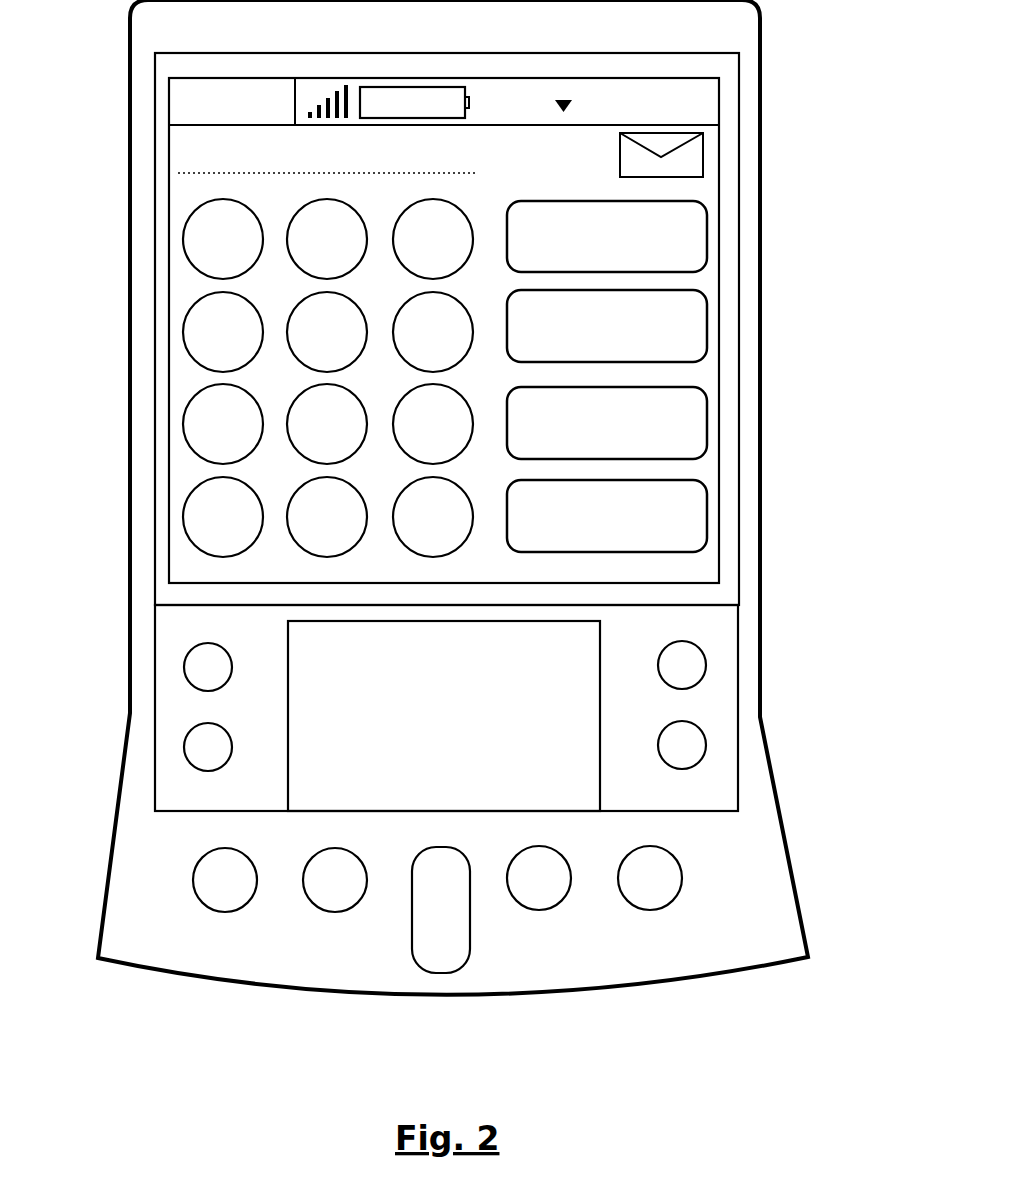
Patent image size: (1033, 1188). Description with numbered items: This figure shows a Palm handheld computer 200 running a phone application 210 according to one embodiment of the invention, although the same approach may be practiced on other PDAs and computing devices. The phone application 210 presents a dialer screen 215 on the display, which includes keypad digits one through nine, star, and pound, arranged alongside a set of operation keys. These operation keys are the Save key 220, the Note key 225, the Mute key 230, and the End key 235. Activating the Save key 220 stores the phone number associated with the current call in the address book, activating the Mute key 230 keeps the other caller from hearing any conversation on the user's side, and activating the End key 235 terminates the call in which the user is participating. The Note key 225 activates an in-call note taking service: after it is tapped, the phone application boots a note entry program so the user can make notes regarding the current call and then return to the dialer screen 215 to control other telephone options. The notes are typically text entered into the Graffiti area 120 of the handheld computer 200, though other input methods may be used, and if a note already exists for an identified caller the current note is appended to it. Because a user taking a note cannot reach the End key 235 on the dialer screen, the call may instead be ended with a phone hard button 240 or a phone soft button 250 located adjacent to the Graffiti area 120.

The handheld computer 200 is at (818, 760).
The phone application 210 is at (727, 168).
The dialer screen 215 is at (118, 188).
The Save key 220 is at (685, 226).
The Note key 225 is at (685, 318).
The Mute key 230 is at (685, 413).
The End key 235 is at (685, 506).
The phone hard button 240 is at (655, 868).
The phone soft button 250 is at (687, 657).
The Graffiti area 120 is at (444, 716).